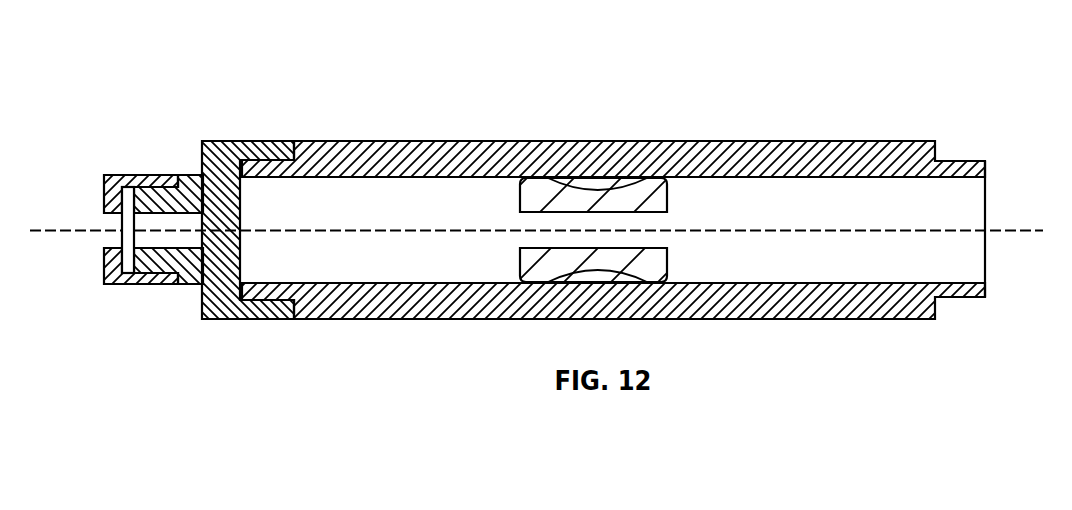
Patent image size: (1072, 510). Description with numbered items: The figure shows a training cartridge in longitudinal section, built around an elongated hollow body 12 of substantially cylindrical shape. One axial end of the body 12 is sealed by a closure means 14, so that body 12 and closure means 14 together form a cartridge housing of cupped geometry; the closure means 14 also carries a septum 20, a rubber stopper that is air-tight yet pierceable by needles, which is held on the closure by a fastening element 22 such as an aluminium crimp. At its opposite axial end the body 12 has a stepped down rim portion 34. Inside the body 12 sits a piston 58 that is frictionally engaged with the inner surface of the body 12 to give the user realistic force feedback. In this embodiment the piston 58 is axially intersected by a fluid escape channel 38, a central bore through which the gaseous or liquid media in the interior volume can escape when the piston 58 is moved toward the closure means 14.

The body 12 is at (457, 148).
The closure means 14 is at (222, 147).
The septum 20 is at (130, 183).
The fastening element 22 is at (187, 177).
The stepped down rim portion 34 is at (960, 162).
The fluid escape channel 38 is at (627, 218).
The piston 58 is at (542, 180).